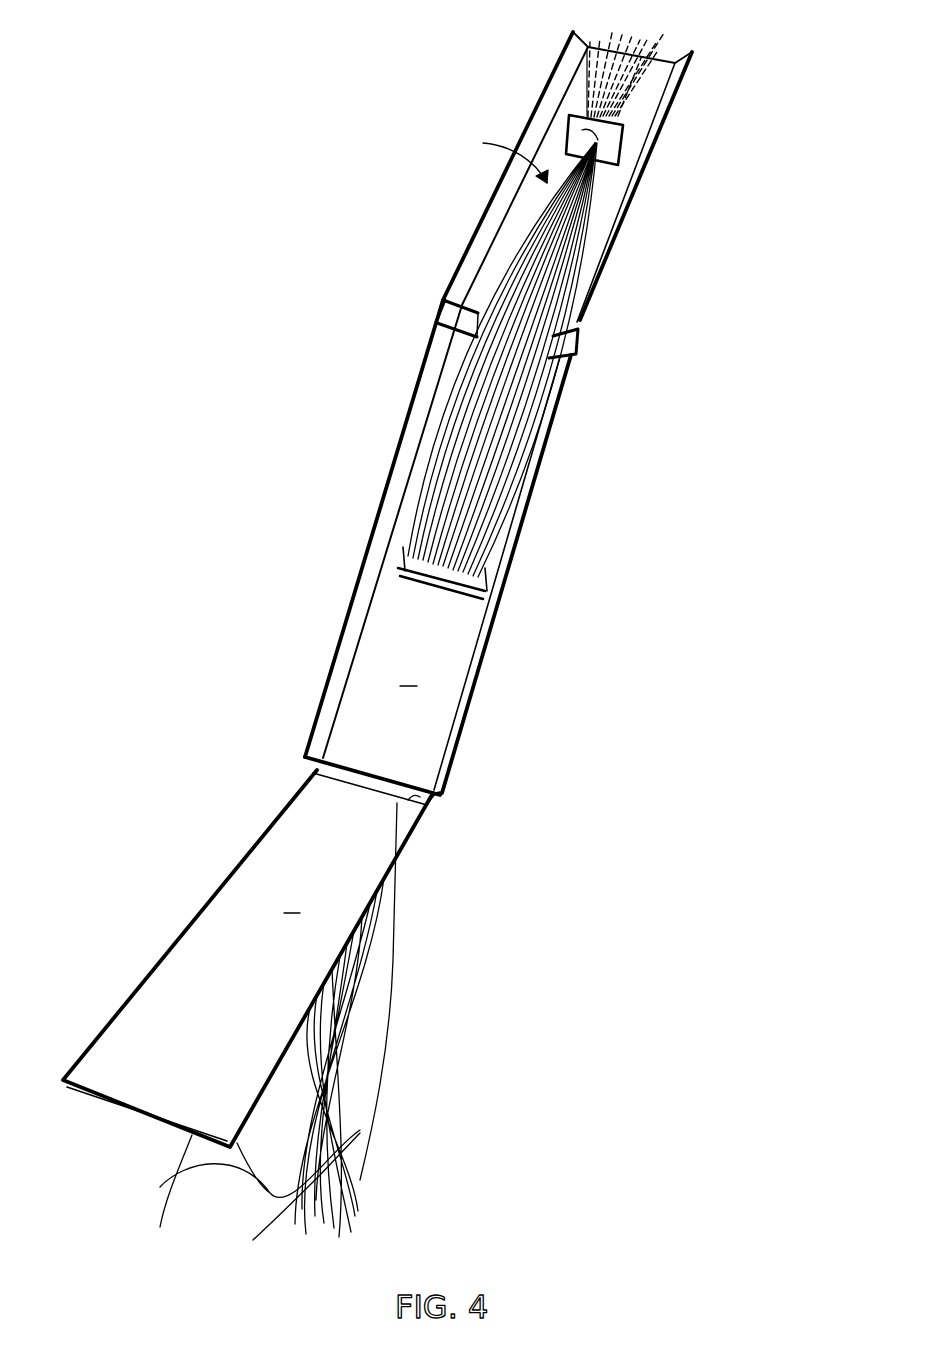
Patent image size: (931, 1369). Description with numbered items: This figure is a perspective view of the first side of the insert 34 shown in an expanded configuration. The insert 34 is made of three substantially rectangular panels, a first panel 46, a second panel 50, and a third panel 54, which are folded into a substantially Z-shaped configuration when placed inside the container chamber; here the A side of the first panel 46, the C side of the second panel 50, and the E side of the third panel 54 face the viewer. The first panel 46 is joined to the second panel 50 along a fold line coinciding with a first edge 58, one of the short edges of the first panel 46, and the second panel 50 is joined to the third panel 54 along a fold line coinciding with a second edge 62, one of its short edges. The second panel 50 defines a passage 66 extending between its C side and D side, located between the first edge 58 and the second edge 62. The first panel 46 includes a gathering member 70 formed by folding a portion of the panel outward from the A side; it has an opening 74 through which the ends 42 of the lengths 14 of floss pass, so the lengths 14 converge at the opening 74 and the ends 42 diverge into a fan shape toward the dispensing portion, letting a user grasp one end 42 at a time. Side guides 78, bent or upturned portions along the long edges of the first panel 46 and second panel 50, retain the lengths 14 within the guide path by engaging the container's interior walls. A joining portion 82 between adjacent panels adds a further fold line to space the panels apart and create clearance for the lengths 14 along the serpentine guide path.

The lengths of floss 14 is at (480, 485).
The insert 34 is at (439, 627).
The ends of the lengths of floss 42 is at (590, 92).
The first panel 46 is at (605, 213).
The second panel 50 is at (420, 470).
The third panel 54 is at (210, 940).
The first edge 58 is at (478, 316).
The second edge 62 is at (420, 785).
The passage 66 is at (400, 568).
The gathering member 70 is at (612, 146).
The opening 74 is at (580, 118).
The side guides 78 is at (508, 190).
The joining portion 82 is at (558, 338).